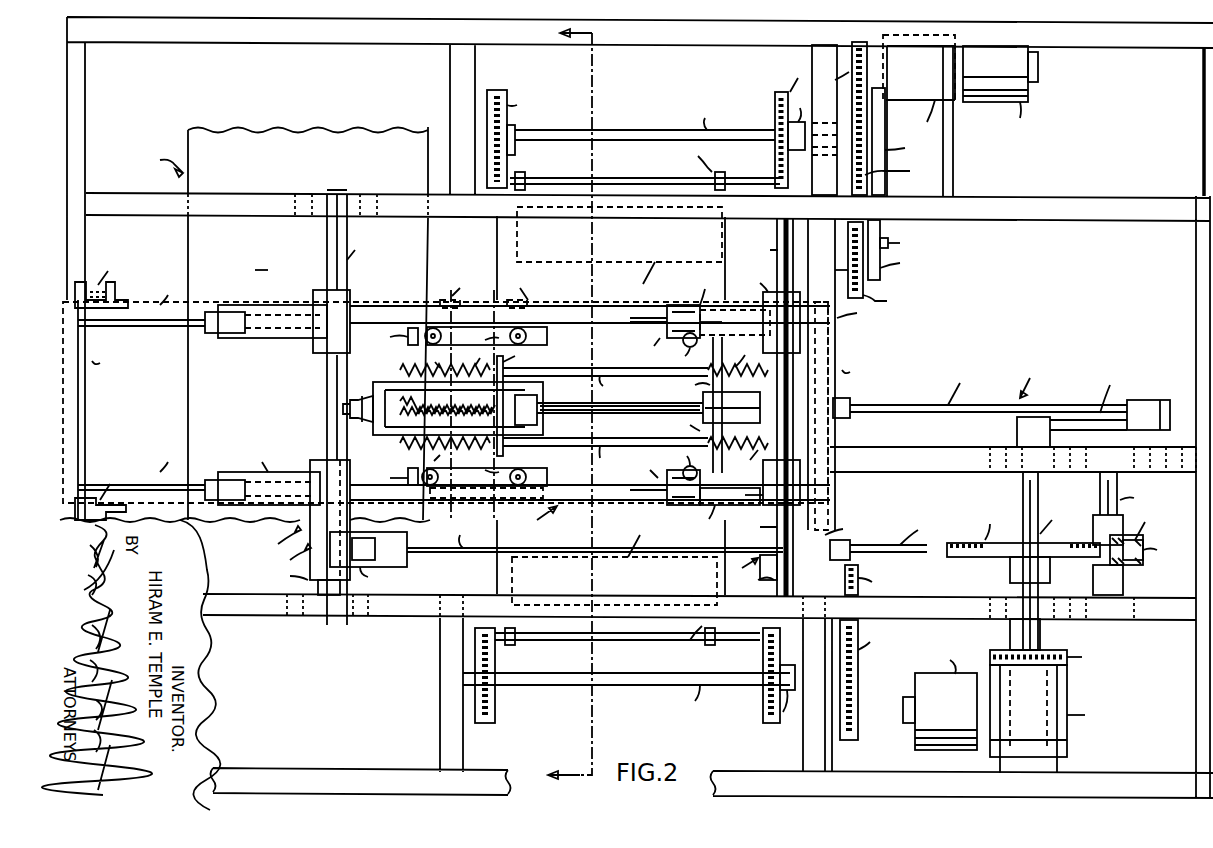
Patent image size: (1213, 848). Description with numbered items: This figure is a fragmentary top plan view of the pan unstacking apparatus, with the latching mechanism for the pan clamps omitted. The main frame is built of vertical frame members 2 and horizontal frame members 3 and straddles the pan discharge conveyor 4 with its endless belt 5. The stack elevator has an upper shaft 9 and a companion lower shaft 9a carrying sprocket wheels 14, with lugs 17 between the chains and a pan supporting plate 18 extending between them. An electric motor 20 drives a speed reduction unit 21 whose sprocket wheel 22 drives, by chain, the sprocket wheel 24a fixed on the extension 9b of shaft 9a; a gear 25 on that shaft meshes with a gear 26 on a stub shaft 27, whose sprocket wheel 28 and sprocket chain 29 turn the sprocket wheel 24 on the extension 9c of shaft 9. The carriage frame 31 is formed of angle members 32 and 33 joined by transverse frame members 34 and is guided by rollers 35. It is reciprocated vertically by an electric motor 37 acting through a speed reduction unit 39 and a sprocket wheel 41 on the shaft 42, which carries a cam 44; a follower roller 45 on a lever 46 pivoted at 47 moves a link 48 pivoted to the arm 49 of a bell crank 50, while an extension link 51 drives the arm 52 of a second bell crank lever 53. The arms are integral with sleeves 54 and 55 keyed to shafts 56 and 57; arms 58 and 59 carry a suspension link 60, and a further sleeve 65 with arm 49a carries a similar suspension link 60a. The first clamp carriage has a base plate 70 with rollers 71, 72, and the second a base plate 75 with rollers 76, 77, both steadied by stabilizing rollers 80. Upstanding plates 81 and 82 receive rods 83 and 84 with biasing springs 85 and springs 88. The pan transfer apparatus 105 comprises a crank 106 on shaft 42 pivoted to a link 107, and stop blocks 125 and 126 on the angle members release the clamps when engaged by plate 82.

The vertical frame member 2 is at (840, 374).
The horizontal frame member 3 is at (398, 622).
The pan discharge conveyor 4 is at (161, 164).
The endless belt 5 is at (259, 261).
The upper shaft 9 is at (626, 675).
The lower shaft 9a is at (645, 120).
The shaft extension 9b is at (798, 120).
The shaft extension 9c is at (783, 705).
The sprocket wheel 14 is at (650, 125).
The lug 17 is at (637, 403).
The pan supporting plate 18 is at (617, 406).
The electric motor 20 is at (1000, 90).
The speed reduction unit 21 is at (919, 115).
The sprocket wheel 22 is at (830, 120).
The sprocket wheel 24 is at (846, 695).
The sprocket wheel 24a is at (894, 118).
The gear 25 is at (899, 141).
The gear 26 is at (895, 250).
The stub shaft 27 is at (901, 243).
The sprocket wheel 28 is at (839, 260).
The sprocket chain 29 is at (876, 441).
The carriage frame 31 is at (590, 508).
The angle member 32 is at (141, 471).
The angle member 33 is at (202, 308).
The transverse frame member 34 is at (467, 416).
The roller 35 is at (101, 388).
The electric motor 37 is at (940, 697).
The speed reduction unit 39 is at (1047, 719).
The sprocket wheel 41 is at (1046, 642).
The shaft 42 is at (1040, 561).
The cam 44 is at (1023, 535).
The follower roller 45 is at (1150, 550).
The lever 46 is at (1137, 537).
The pivot 47 is at (1124, 533).
The link 48 is at (894, 532).
The bell crank arm 49 is at (847, 536).
The arm 49a is at (590, 298).
The bell crank 50 is at (749, 567).
The extension link 51 is at (595, 535).
The bell crank arm 52 is at (368, 558).
The second bell crank lever 53 is at (302, 520).
The sleeve 54 is at (765, 407).
The sleeve 55 is at (321, 410).
The shaft 56 is at (761, 407).
The shaft 57 is at (304, 581).
The bell crank arm 58 is at (726, 511).
The bell crank arm 59 is at (262, 475).
The suspension link 60 is at (665, 481).
The suspension link 60a is at (665, 332).
The sleeve 65 is at (769, 311).
The base plate 70 is at (443, 392).
The roller 71 is at (486, 498).
The roller 72 is at (486, 402).
The base plate 75 is at (718, 398).
The roller 76 is at (761, 482).
The roller 77 is at (735, 322).
The stabilizing roller 80 is at (559, 407).
The upstanding plate 81 is at (517, 402).
The upstanding plate 82 is at (620, 422).
The rod 83 is at (605, 457).
The rod 84 is at (605, 383).
The biasing spring 85 is at (584, 457).
The spring 88 is at (584, 405).
The pan transfer apparatus 105 is at (1031, 405).
The crank 106 is at (1110, 400).
The link 107 is at (980, 392).
The stop block 125 is at (390, 473).
The stop block 126 is at (390, 340).